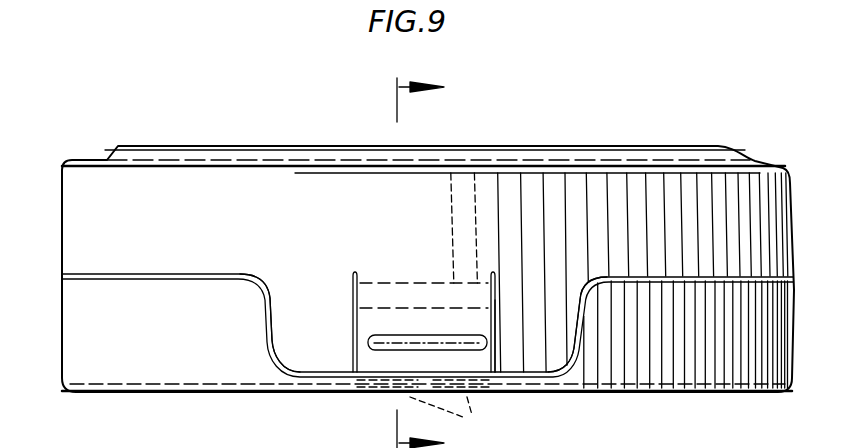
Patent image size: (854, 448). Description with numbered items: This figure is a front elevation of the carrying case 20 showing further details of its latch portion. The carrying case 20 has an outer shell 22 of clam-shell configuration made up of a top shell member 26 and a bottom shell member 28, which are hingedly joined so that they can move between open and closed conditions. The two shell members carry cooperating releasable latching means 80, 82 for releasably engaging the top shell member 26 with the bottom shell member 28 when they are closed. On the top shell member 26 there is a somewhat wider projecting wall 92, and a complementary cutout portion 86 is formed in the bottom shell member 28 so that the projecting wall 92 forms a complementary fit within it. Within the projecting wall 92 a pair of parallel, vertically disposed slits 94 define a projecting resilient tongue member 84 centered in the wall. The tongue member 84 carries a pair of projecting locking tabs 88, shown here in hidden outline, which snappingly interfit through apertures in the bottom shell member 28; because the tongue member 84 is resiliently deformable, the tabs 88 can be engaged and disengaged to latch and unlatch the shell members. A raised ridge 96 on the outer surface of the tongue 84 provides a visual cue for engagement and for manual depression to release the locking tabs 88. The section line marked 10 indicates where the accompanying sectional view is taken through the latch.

The section line 10- 10 is at (401, 261).
The carrying case 20 is at (577, 136).
The outer shell 22 is at (202, 400).
The top shell member 26 is at (658, 152).
The bottom shell member 28 is at (727, 394).
The releasable latching means 80 is at (366, 333).
The releasable latching means 82 is at (366, 400).
The resilient tongue member 84 is at (417, 283).
The cutout portion 86 is at (276, 320).
The locking tabs 88 is at (497, 420).
The projecting wall 92 is at (537, 352).
The parallel slits 94 is at (354, 272).
The raised ridge 96 is at (494, 336).